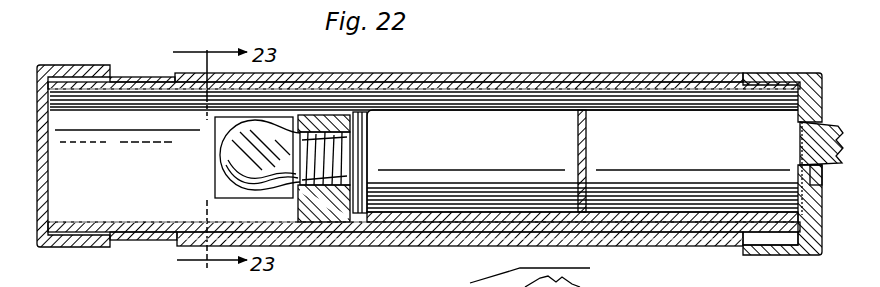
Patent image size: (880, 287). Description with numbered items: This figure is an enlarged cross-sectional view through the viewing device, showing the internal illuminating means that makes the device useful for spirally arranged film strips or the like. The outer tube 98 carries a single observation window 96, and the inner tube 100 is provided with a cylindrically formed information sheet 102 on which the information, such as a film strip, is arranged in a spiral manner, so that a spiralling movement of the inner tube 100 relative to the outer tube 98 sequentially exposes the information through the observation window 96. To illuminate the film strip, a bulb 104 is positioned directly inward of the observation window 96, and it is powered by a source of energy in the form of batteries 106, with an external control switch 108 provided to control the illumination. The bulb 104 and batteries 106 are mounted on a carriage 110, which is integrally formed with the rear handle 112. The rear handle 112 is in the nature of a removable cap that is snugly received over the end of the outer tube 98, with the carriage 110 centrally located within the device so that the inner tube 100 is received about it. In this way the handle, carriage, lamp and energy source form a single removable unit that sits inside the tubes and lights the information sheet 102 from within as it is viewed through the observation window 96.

The observation window 96 is at (228, 185).
The outer tube 98 is at (677, 82).
The inner tube 100 is at (149, 236).
The information sheet 102 is at (110, 222).
The bulb 104 is at (215, 137).
The batteries 106 is at (545, 118).
The external control switch 108 is at (803, 121).
The carriage 110 is at (667, 222).
The rear handle 112 is at (788, 248).